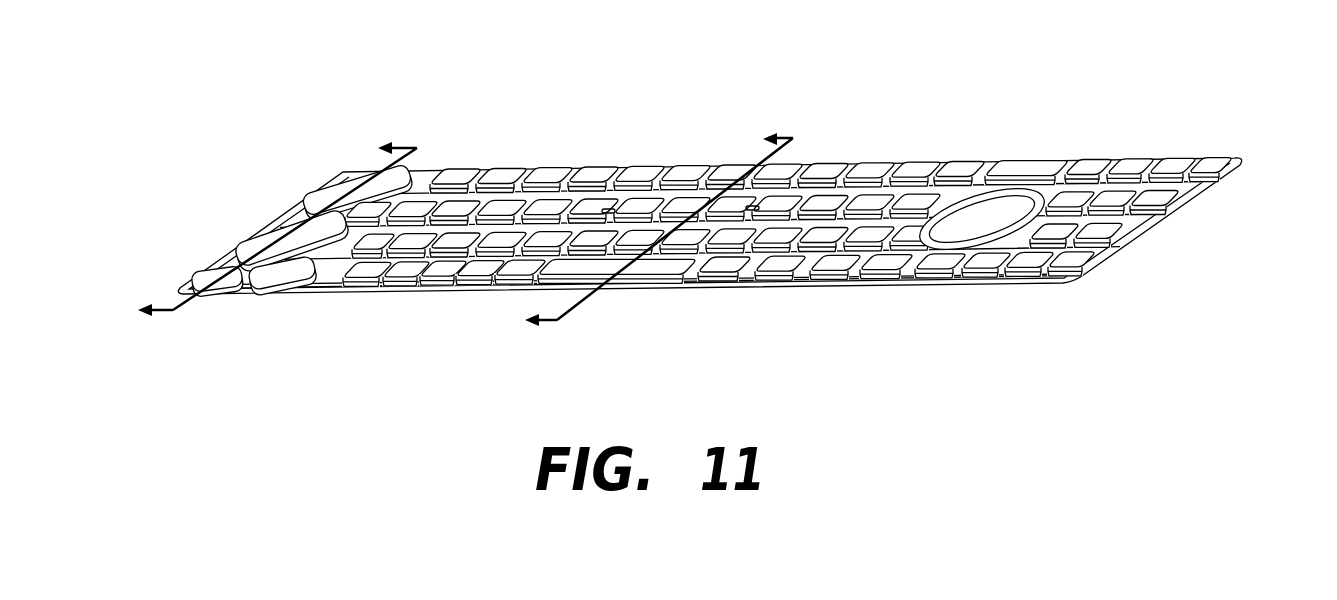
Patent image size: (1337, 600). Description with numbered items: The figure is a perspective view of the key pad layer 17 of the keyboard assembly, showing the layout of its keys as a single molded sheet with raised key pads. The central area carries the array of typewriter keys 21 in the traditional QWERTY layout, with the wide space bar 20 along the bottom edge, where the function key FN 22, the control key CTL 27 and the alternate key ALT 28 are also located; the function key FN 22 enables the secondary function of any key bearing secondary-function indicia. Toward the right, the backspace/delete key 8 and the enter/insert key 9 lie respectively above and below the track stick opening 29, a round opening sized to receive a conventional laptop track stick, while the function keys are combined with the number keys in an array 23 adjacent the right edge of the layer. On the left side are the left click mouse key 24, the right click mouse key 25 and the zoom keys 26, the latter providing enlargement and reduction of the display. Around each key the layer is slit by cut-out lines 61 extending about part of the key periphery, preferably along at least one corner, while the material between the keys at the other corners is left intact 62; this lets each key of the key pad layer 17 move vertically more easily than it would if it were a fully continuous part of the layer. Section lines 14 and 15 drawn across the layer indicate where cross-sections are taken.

The backspace/delete key 8 is at (1047, 162).
The enter/insert key 9 is at (920, 278).
The section line 14- 14 is at (257, 226).
The section line 15- 15 is at (638, 233).
The key pad layer 17 is at (435, 167).
The space bar 20 is at (648, 282).
The typewriter keys 21 is at (713, 150).
The function key FN 22 is at (347, 293).
The array of function and number keys 23 is at (1123, 152).
The left click mouse key 24 is at (337, 190).
The right click mouse key 25 is at (276, 237).
The zoom keys 26 is at (280, 283).
The control key CTL 27 is at (393, 290).
The alternate key ALT 28 is at (453, 283).
The track stick opening 29 is at (982, 219).
The cut-out lines 61 is at (427, 290).
The intact key pad layer portion 62 is at (737, 283).